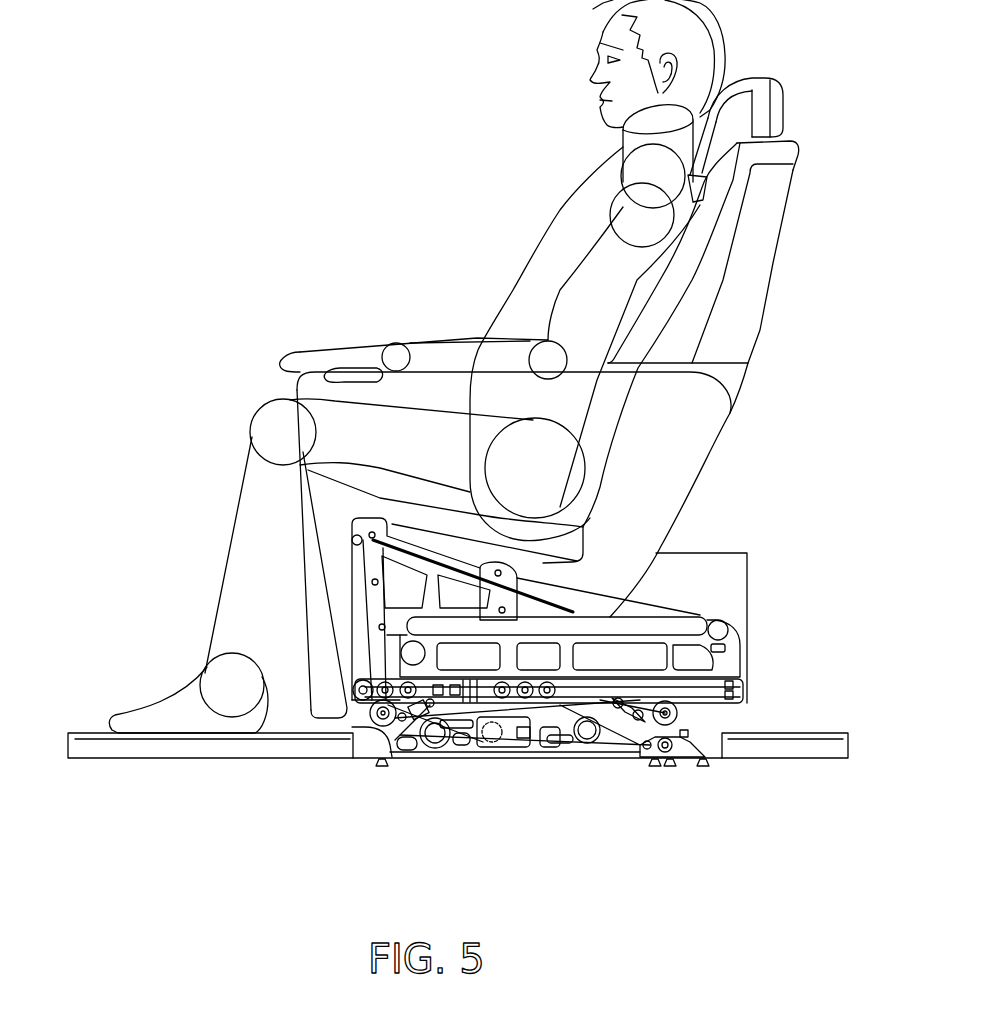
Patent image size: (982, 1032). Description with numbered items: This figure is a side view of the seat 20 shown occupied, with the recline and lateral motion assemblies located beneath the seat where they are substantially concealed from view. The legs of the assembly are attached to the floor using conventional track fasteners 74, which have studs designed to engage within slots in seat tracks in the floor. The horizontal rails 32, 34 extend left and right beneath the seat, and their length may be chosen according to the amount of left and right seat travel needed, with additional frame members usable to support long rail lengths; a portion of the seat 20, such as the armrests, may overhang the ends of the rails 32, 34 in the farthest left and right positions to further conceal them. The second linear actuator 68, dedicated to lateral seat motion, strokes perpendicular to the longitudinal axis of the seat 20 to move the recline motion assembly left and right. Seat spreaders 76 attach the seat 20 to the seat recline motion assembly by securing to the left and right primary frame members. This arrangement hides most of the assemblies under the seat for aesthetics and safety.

The seat 20 is at (797, 183).
The horizontal rail 32 is at (383, 727).
The horizontal rail 34 is at (680, 722).
The second linear actuator 68 is at (492, 742).
The track fastener 74 is at (687, 757).
The seat spreader 76 is at (362, 593).